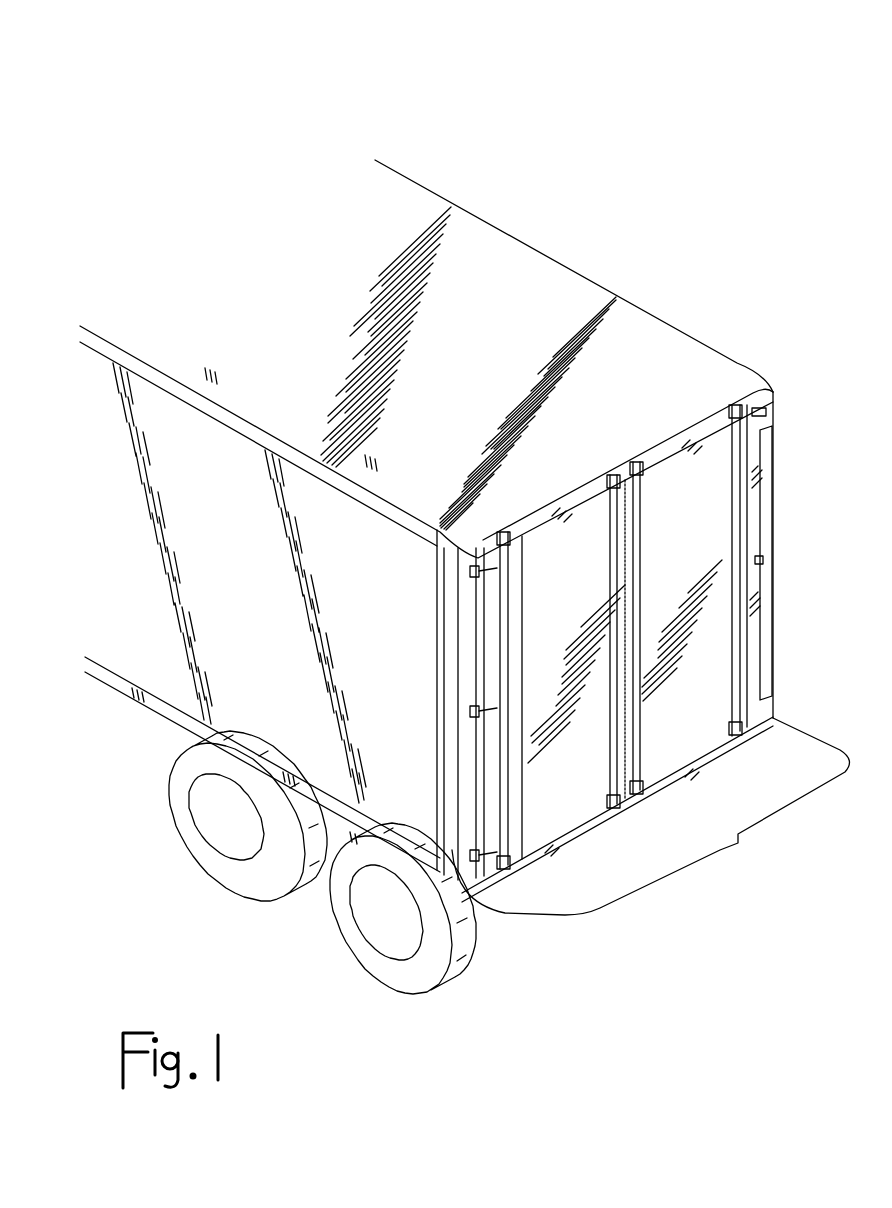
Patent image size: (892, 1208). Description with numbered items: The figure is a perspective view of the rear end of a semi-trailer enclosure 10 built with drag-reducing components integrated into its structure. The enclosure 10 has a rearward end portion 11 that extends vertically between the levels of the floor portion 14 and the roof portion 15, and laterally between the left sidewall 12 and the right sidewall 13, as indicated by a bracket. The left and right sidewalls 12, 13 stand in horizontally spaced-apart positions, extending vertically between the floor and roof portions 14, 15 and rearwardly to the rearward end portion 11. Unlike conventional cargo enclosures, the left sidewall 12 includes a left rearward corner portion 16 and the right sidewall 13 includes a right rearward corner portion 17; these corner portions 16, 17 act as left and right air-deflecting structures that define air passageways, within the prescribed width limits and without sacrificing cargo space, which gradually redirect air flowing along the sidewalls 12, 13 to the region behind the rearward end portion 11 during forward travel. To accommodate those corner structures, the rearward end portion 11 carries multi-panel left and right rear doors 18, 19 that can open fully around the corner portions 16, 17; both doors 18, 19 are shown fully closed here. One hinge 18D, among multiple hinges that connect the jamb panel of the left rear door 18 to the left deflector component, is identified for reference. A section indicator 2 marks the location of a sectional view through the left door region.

The semi-trailer enclosure 10 is at (704, 108).
The rearward end portion 11 is at (737, 848).
The left sidewall 12 is at (247, 463).
The right sidewall 13 is at (565, 267).
The floor portion 14 is at (163, 710).
The roof portion 15 is at (397, 192).
The left rearward corner portion 16 is at (481, 870).
The right rearward corner portion 17 is at (773, 673).
The left rear door 18 is at (585, 766).
The hinge 18D is at (478, 717).
The right rear door 19 is at (702, 716).
The section line 2- 2 is at (530, 646).